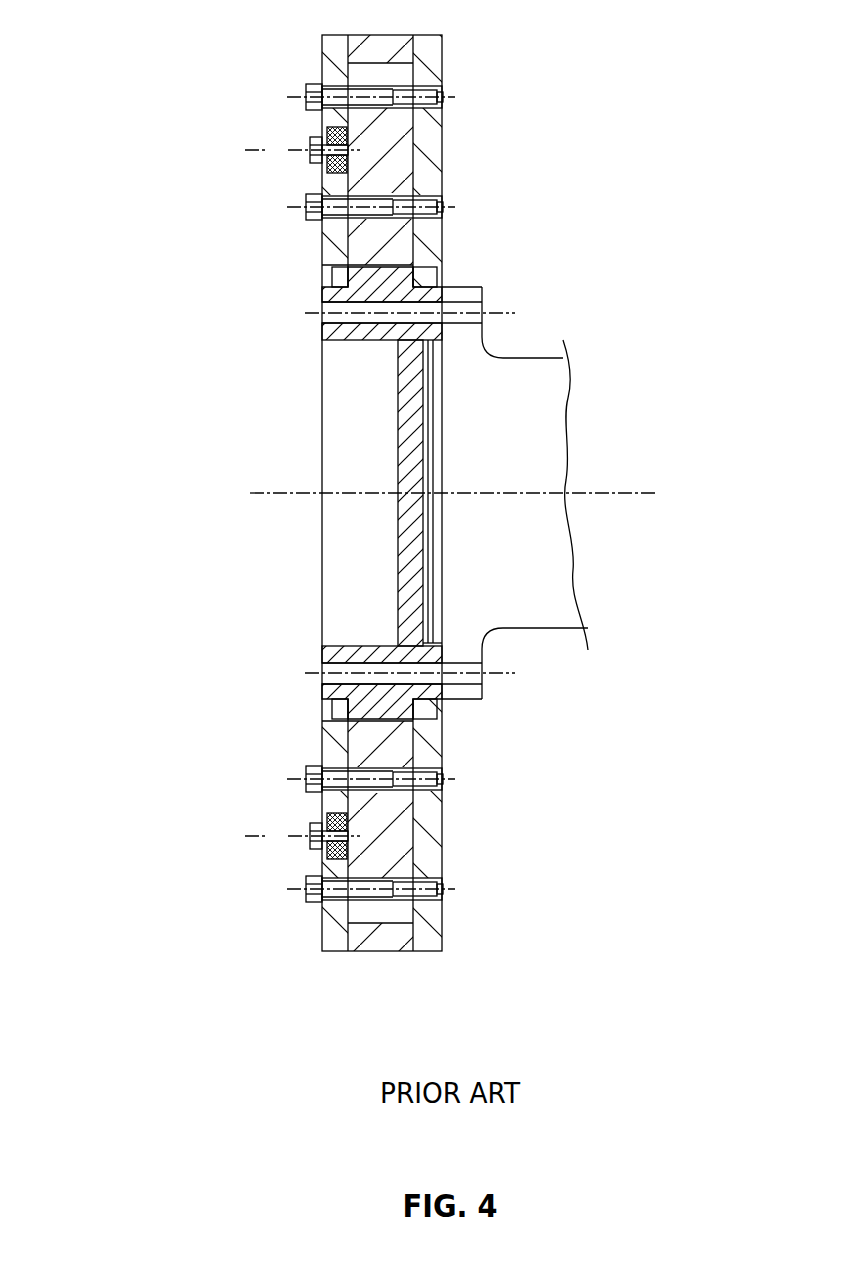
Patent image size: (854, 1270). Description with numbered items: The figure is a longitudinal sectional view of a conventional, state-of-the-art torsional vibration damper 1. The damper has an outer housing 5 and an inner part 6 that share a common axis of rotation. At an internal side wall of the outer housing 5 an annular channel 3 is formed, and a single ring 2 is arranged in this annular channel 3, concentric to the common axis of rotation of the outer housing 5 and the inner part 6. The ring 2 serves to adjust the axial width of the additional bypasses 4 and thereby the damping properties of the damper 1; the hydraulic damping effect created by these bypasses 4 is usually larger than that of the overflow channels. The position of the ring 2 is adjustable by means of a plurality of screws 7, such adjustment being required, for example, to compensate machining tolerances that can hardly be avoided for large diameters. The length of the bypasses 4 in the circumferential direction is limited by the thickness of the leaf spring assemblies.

The torsional vibration damper 1 is at (332, 63).
The ring 2 is at (323, 133).
The annular channel 3 is at (347, 173).
The bypasses 4 is at (347, 133).
The outer housing 5 is at (436, 244).
The inner part 6 is at (340, 290).
The screws 7 is at (310, 154).